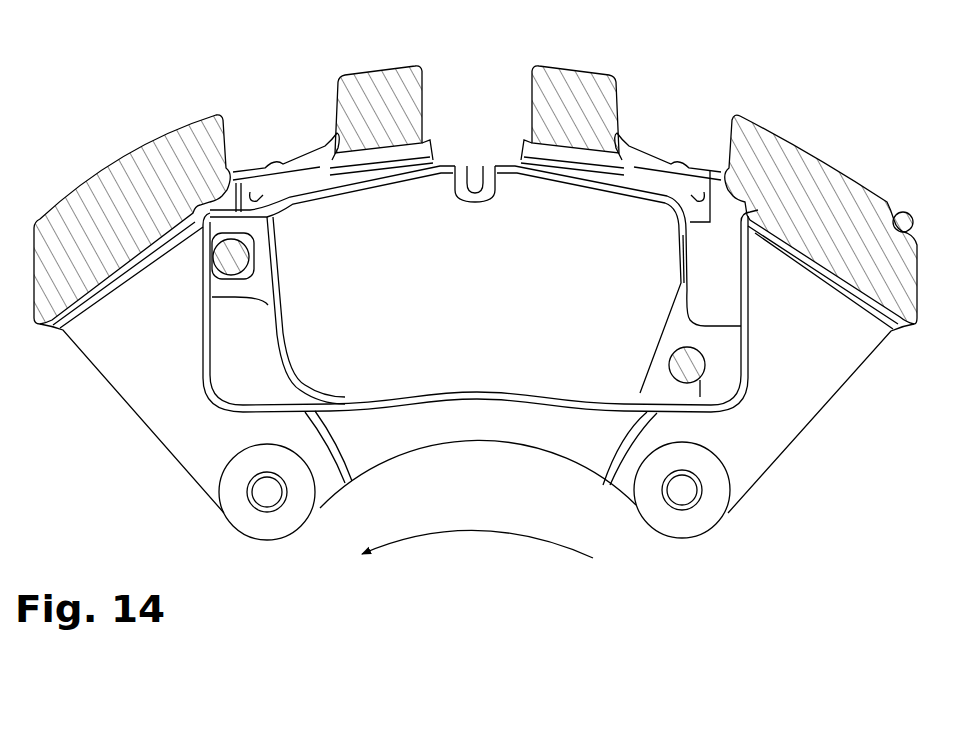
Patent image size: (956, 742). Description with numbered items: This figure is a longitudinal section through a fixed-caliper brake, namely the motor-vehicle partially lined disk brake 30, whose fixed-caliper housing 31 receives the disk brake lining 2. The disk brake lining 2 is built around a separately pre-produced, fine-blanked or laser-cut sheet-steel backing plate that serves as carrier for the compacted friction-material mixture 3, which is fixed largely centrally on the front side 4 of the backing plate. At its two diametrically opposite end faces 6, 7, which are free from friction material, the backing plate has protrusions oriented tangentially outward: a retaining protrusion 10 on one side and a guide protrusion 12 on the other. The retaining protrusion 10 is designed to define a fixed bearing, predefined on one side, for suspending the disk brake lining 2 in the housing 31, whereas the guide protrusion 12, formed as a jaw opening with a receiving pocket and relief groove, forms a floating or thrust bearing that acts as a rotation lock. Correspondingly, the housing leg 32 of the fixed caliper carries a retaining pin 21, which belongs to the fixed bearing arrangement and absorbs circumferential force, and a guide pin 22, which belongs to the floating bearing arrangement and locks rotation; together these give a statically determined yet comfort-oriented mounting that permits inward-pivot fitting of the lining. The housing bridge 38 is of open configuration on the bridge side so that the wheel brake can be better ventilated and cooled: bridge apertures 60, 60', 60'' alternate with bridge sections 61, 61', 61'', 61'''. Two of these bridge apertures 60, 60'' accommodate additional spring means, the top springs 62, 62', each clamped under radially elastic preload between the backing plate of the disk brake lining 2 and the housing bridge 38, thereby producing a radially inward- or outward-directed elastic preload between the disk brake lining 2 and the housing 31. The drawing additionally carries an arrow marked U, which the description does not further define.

The disk brake lining 2 is at (445, 401).
The compacted friction-material mixture 3 is at (519, 375).
The front side 4 is at (546, 305).
The end face 6 is at (687, 287).
The end face 7 is at (278, 343).
The retaining protrusion 10 is at (700, 403).
The guide protrusion 12 is at (220, 288).
The retaining pin 21 is at (703, 358).
The guide pin 22 is at (214, 259).
The motor-vehicle partially lined disk brake 30 is at (782, 598).
The fixed-caliper housing 31 is at (786, 468).
The housing leg 32 is at (173, 440).
The housing bridge 38 is at (158, 124).
The bridge aperture 60 is at (249, 101).
The bridge aperture 60' is at (479, 49).
The bridge aperture 60'' is at (712, 99).
The bridge section 61 is at (132, 213).
The bridge section 61' is at (381, 90).
The bridge section 61'' is at (572, 90).
The bridge section 61''' is at (821, 214).
The spring means (top spring) 62 is at (286, 128).
The spring means (top spring) 62' is at (668, 122).
The direction of rotation U is at (486, 528).